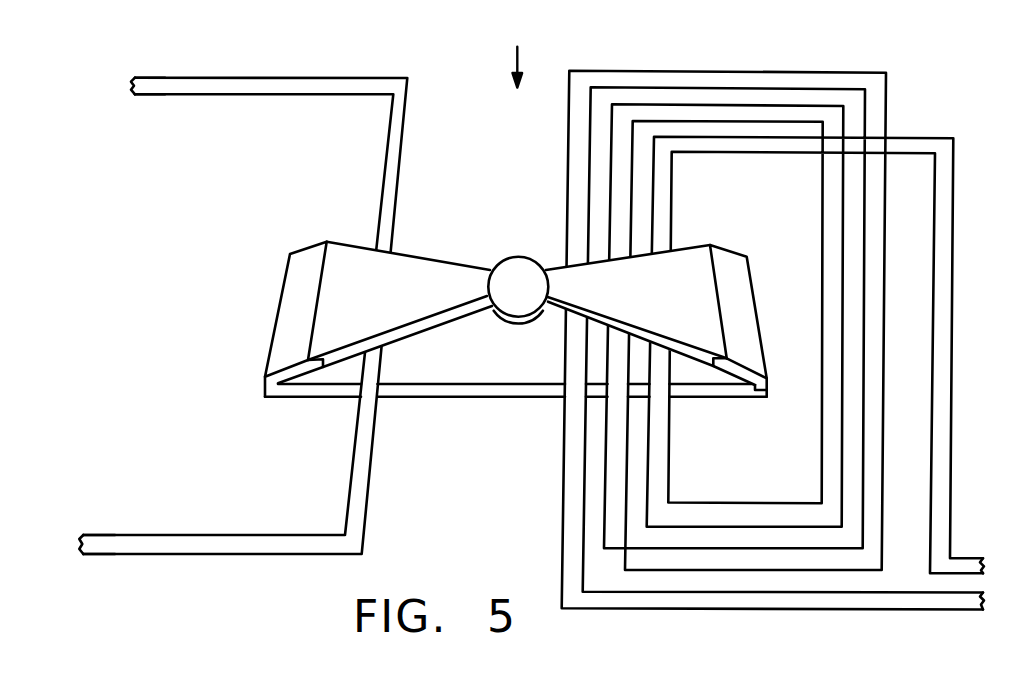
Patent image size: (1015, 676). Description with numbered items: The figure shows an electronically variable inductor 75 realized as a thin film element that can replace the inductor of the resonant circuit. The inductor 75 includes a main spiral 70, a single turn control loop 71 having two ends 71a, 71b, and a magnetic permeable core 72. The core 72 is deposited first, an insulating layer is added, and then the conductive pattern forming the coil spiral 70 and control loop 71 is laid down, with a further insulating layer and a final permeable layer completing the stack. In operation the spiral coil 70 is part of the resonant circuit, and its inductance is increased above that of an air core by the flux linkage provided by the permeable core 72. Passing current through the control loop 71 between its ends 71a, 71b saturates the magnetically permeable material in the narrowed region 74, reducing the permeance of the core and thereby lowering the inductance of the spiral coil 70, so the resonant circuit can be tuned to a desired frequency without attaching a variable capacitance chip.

The main spiral 70 is at (753, 78).
The control loop 71 is at (221, 296).
The conductor end 71a is at (130, 80).
The conductor end 71b is at (82, 543).
The magnetic permeable core 72 is at (476, 376).
The narrowed region 74 is at (523, 258).
The electronically variable inductor 75 is at (519, 54).